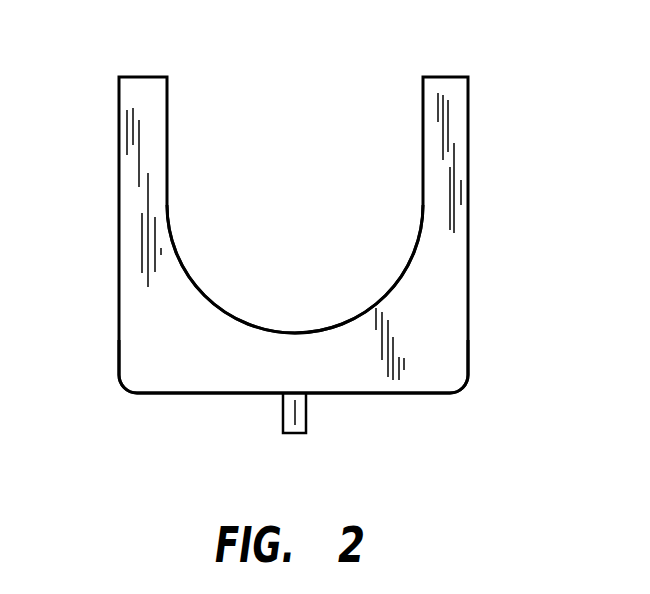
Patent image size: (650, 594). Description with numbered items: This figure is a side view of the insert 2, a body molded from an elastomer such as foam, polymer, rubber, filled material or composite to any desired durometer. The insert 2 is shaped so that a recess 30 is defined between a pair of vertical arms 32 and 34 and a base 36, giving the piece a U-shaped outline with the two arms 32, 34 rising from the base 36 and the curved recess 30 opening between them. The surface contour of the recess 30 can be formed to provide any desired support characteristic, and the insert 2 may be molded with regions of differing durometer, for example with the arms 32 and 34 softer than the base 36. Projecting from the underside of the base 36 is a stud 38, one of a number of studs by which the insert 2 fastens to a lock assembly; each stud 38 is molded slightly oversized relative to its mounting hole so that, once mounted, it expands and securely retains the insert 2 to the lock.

The insert 2 is at (468, 158).
The recess 30 is at (270, 236).
The vertical arm 32 is at (140, 77).
The vertical arm 34 is at (455, 75).
The base 36 is at (138, 360).
The stud 38 is at (306, 412).